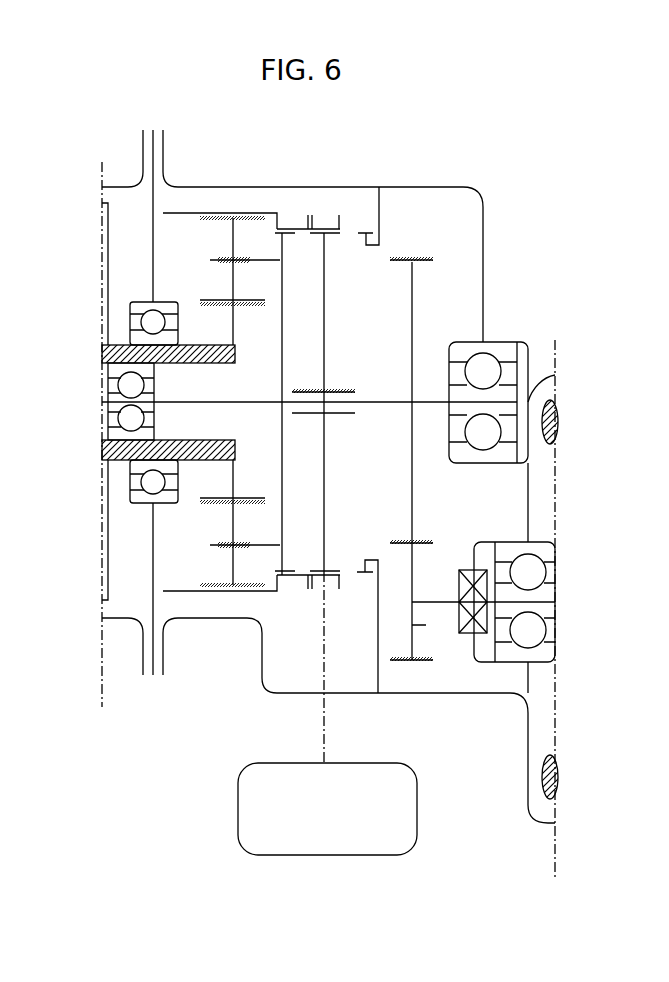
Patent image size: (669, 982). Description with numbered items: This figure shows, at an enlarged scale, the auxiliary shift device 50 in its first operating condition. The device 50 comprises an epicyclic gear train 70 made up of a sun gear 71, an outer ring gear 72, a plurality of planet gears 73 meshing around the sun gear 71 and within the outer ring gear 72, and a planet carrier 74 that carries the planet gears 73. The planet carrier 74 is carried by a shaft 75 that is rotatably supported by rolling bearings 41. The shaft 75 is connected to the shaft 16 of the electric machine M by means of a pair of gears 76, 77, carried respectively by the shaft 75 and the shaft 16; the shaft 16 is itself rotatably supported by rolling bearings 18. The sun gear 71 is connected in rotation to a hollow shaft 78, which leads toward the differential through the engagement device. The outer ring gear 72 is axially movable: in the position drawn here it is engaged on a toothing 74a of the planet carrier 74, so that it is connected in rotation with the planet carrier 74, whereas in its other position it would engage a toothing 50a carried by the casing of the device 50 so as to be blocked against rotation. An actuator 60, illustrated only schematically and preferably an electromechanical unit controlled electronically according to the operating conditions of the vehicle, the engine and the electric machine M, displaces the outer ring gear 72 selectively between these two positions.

The auxiliary shift device 50 is at (492, 158).
The toothing carried by the casing of the device 50a is at (364, 231).
The epicyclic gear train 70 is at (205, 245).
The sun gear 71 is at (233, 330).
The outer ring gear 72 is at (190, 214).
The planet gears 73 is at (233, 247).
The planet carrier 74 is at (282, 463).
The toothing of the planet carrier 74a is at (288, 236).
The shaft 75 is at (370, 402).
The gear 76 is at (412, 290).
The gear 77 is at (412, 626).
The hollow shaft 78 is at (110, 446).
The rolling bearings 41 is at (127, 387).
The shaft of the electric machine 16 is at (418, 602).
The rolling bearings 18 is at (531, 572).
The actuator 60 is at (266, 802).
The electric machine M is at (522, 780).